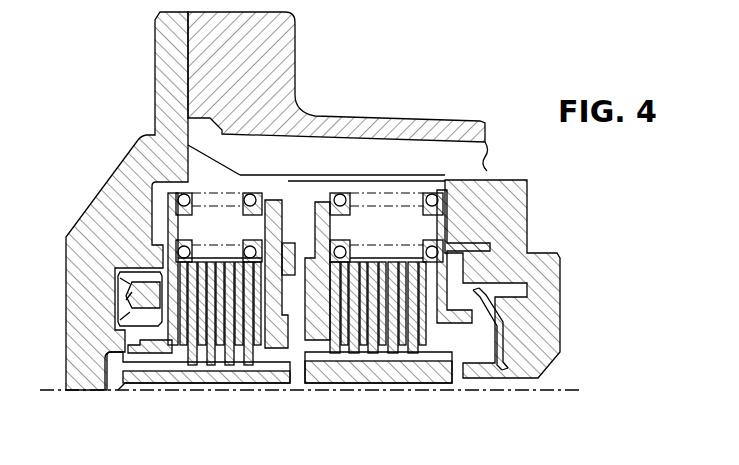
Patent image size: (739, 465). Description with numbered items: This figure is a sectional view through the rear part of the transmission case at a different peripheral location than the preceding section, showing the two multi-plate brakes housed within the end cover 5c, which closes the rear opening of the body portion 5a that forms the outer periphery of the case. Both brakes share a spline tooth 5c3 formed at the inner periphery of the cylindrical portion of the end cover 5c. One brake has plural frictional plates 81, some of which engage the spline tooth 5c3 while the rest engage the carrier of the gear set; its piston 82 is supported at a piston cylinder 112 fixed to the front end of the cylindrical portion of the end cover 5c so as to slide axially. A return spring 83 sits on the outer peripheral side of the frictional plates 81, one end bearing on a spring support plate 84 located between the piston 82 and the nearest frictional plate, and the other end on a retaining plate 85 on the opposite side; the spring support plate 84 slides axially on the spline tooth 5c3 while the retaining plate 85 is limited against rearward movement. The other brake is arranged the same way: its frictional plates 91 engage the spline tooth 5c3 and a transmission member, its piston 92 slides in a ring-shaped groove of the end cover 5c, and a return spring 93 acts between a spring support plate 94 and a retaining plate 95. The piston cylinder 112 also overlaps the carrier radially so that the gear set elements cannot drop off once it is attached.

The body portion 5a is at (345, 116).
The end cover 5c is at (129, 233).
The spline tooth 5c3 is at (290, 182).
The return spring 93 is at (232, 186).
The return spring 83 is at (396, 178).
The piston 92 is at (128, 298).
The spring support plate 94 is at (170, 350).
The frictional plates 91 is at (233, 360).
The retaining plate 95 is at (278, 352).
The retaining plate 85 is at (316, 345).
The frictional plates 81 is at (378, 348).
The spring support plate 84 is at (446, 320).
The piston 82 is at (494, 322).
The piston cylinder 112 is at (548, 284).